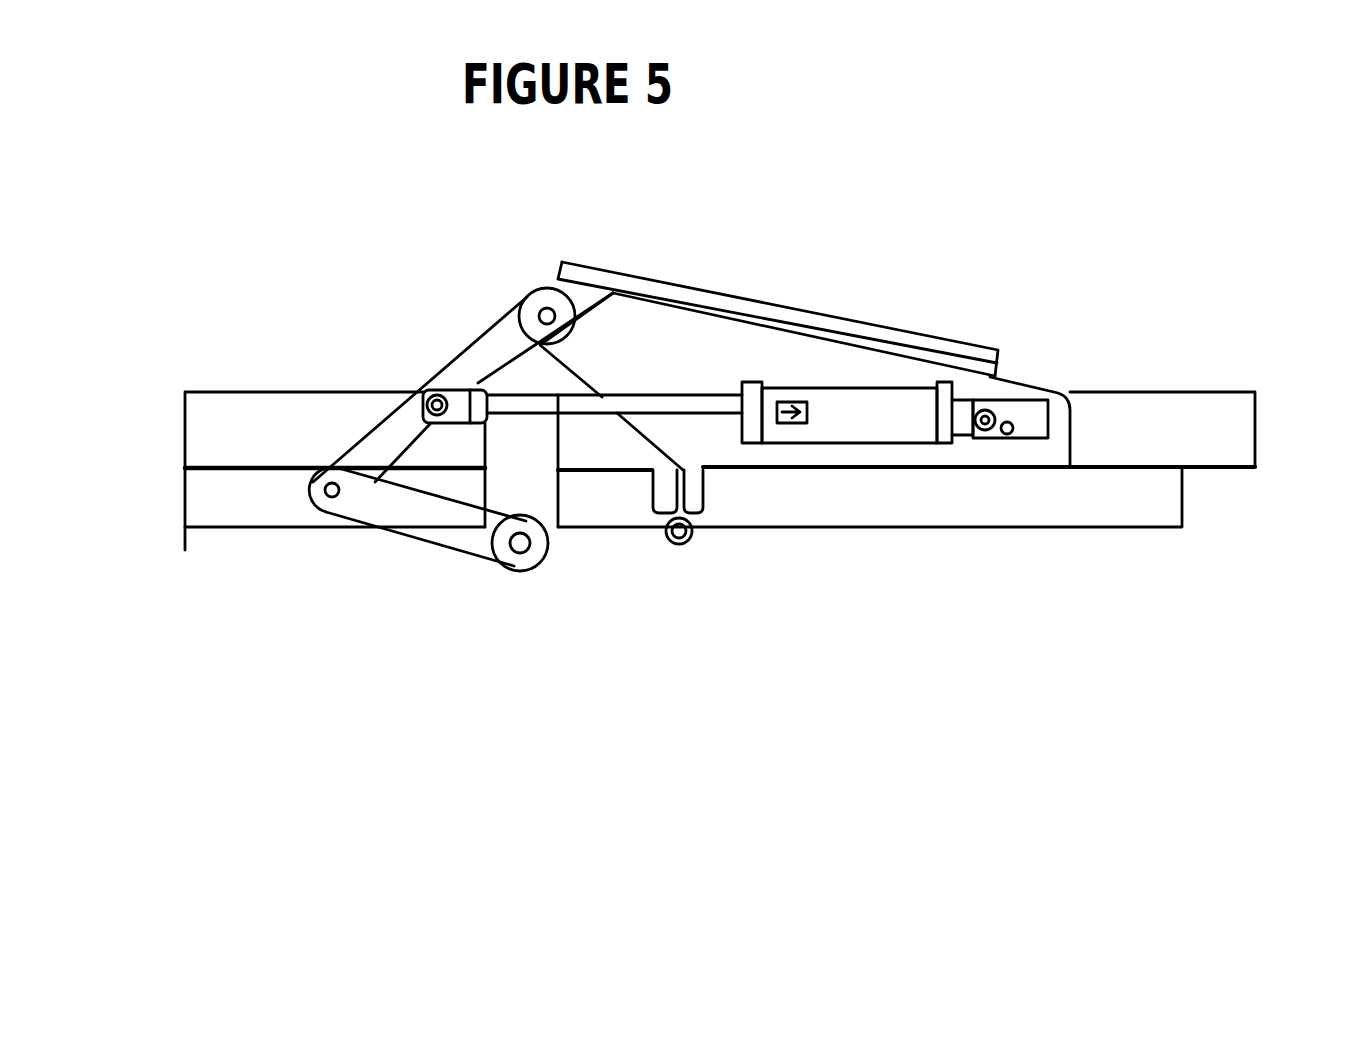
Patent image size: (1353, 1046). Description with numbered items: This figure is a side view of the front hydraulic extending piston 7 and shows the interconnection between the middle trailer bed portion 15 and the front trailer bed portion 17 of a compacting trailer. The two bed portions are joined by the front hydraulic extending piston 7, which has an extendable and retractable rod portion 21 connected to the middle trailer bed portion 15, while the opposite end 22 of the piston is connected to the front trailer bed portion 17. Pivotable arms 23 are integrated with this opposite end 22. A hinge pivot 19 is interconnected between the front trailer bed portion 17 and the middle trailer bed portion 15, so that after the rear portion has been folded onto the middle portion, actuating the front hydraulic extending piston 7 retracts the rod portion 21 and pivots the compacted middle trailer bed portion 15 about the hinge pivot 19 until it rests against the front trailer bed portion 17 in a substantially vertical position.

The front hydraulic extending piston 7 is at (815, 411).
The middle trailer bed portion 15 is at (1222, 444).
The front trailer bed portion 17 is at (225, 420).
The hinge pivot 19 is at (678, 547).
The extendable and retractable rod portion 21 is at (613, 410).
The opposite end 22 is at (437, 393).
The pivotable arms 23 is at (370, 442).